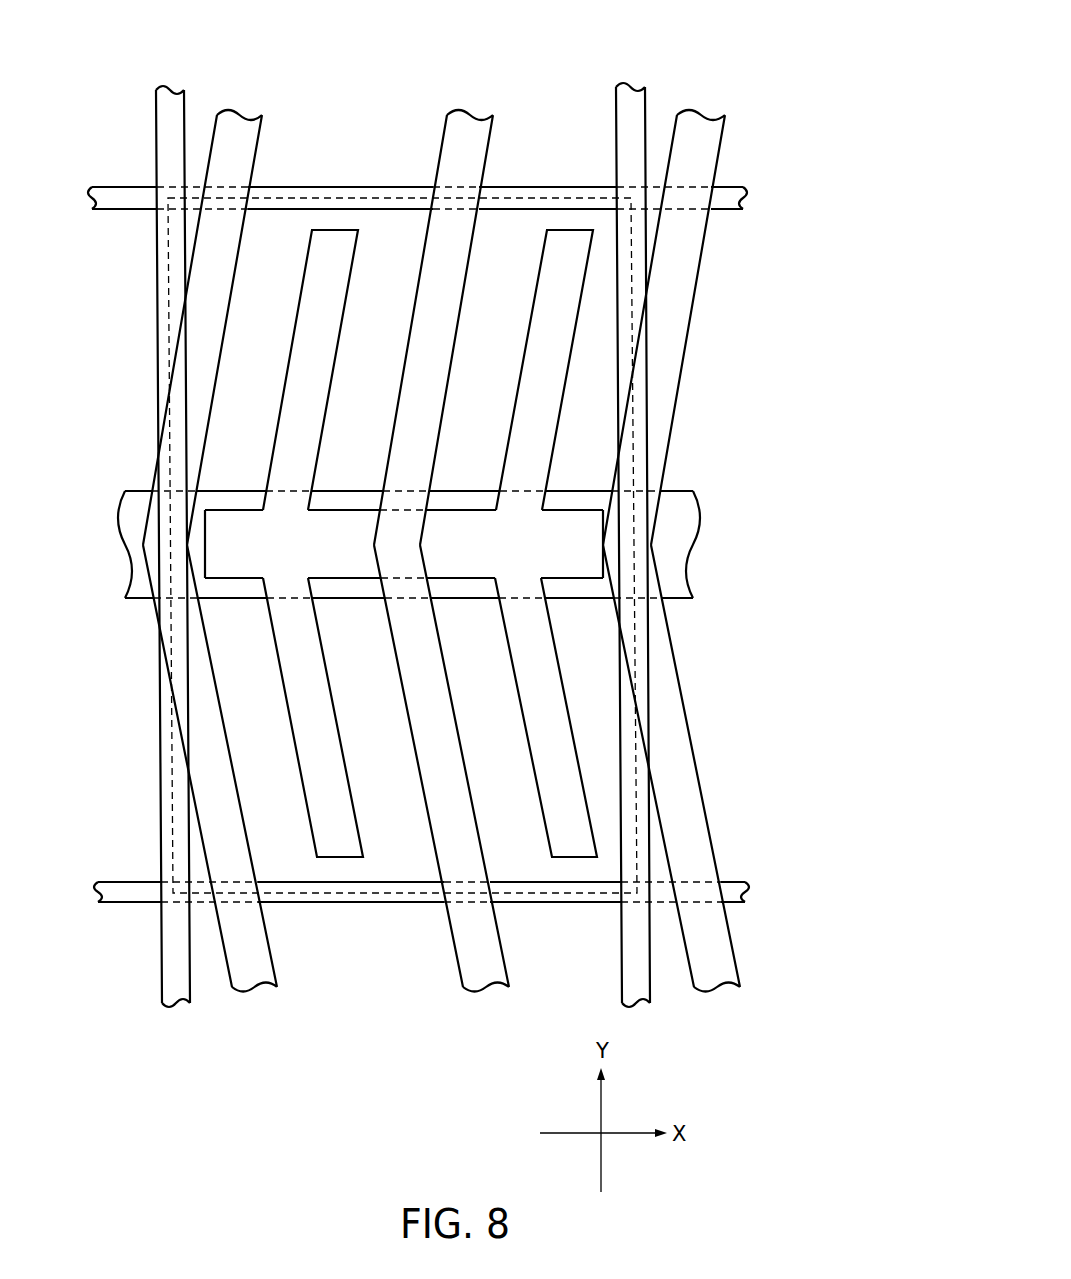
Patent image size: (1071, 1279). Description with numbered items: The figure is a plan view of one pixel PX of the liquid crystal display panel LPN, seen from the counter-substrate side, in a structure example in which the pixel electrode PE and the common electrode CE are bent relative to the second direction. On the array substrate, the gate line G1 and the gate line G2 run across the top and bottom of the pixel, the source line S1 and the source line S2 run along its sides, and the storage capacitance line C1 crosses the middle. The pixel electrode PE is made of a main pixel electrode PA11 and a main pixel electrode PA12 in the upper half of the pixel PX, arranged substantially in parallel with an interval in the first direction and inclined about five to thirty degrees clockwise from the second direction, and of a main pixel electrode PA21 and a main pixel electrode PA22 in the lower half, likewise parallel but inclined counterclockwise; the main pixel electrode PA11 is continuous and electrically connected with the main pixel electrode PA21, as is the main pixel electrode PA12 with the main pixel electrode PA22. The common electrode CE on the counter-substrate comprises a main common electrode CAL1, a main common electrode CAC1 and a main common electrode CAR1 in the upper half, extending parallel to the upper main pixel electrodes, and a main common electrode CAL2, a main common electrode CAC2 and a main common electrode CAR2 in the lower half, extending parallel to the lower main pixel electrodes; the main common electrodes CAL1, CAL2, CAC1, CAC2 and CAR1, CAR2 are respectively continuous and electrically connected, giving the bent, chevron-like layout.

The gate line G1 is at (97, 198).
The gate line G2 is at (101, 892).
The source line S1 is at (166, 96).
The source line S2 is at (627, 95).
The storage capacitance line C1 is at (131, 523).
The pixel PX is at (633, 195).
The pixel electrode PE is at (573, 719).
The main pixel electrode PA11 is at (331, 238).
The main pixel electrode PA12 is at (567, 238).
The main pixel electrode PA21 is at (337, 846).
The main pixel electrode PA22 is at (574, 846).
The main common electrode CAL1 is at (238, 118).
The main common electrode CAL2 is at (259, 970).
The main common electrode CAC1 is at (463, 120).
The main common electrode CAC2 is at (481, 968).
The main common electrode CAR1 is at (708, 125).
The main common electrode CAR2 is at (713, 968).
The common electrode CE is at (227, 967).
The liquid crystal display panel LPN is at (725, 53).